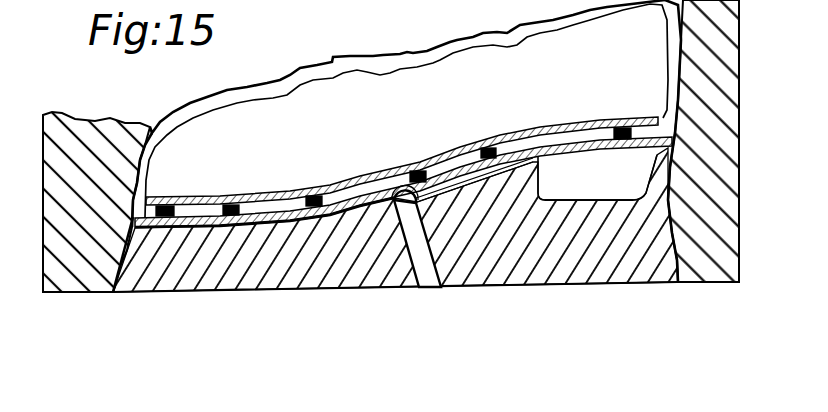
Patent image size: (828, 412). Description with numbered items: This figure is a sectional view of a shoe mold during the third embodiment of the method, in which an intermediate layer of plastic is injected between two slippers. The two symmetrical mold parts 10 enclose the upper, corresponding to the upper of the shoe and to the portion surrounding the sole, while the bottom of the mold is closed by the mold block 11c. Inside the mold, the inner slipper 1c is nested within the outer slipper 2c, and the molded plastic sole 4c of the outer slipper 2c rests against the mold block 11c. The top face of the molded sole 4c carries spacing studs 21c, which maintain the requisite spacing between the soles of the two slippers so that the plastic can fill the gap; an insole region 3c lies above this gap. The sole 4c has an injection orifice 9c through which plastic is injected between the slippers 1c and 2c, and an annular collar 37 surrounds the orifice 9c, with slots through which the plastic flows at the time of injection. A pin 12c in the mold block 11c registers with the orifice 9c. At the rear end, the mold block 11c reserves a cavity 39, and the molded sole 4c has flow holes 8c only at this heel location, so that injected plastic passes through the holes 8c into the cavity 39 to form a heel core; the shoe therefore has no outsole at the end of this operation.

The mold part 10 is at (63, 165).
The mold block 11c is at (218, 273).
The pin 12c is at (431, 280).
The inner slipper 1c is at (294, 86).
The outer slipper 2c is at (226, 89).
The insole 3c is at (254, 197).
The molded sole 4c is at (197, 218).
The flow holes 8c is at (553, 155).
The injection orifice 9c is at (395, 183).
The spacing studs 21c is at (330, 195).
The annular collar 37 is at (427, 173).
The cavity 39 is at (594, 200).